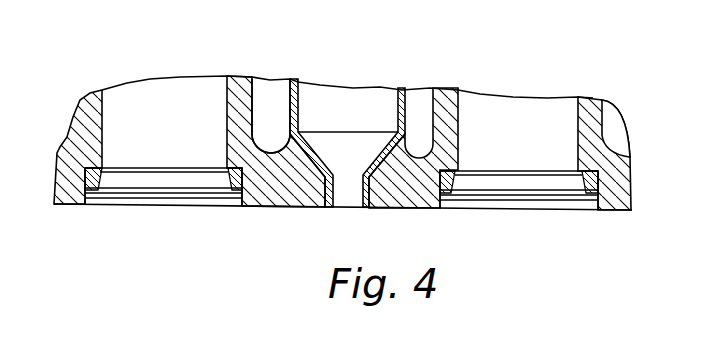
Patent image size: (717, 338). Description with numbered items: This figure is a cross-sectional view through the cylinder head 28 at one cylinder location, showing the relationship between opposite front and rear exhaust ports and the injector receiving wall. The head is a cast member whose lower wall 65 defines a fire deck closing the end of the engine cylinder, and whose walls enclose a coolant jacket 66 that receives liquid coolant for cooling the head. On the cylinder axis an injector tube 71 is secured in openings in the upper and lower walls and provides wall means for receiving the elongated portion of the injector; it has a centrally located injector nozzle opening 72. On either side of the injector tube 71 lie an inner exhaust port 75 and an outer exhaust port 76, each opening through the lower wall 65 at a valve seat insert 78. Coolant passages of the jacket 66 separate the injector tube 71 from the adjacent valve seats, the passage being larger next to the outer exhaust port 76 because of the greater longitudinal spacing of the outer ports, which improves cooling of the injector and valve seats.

The cylinder head 28 is at (612, 137).
The lower wall 65 is at (630, 212).
The coolant jacket 66 is at (272, 105).
The injector tube 71 is at (402, 92).
The injector nozzle opening 72 is at (337, 197).
The exhaust port 75 is at (578, 127).
The exhaust port 76 is at (103, 106).
The valve seat insert 78 is at (93, 181).